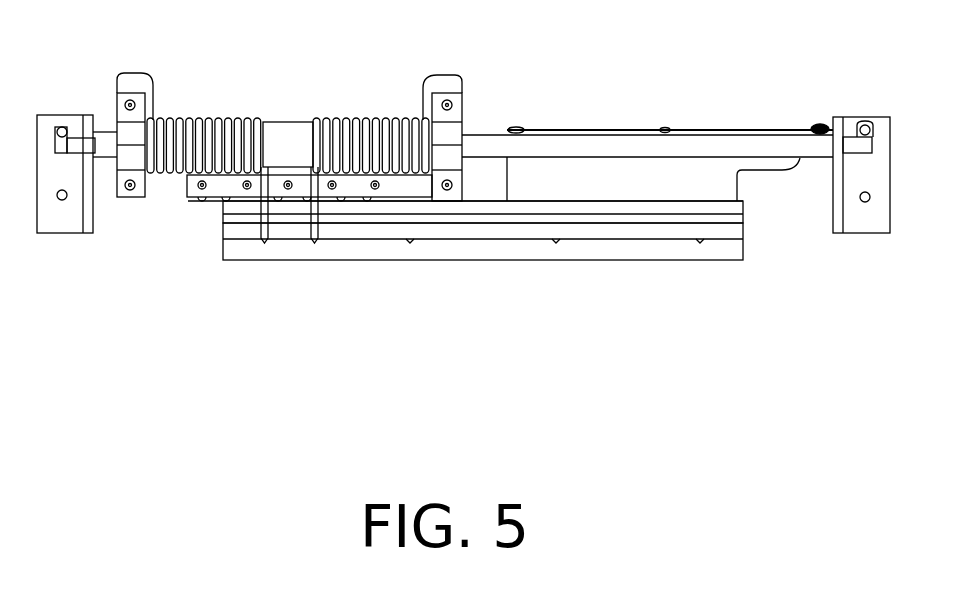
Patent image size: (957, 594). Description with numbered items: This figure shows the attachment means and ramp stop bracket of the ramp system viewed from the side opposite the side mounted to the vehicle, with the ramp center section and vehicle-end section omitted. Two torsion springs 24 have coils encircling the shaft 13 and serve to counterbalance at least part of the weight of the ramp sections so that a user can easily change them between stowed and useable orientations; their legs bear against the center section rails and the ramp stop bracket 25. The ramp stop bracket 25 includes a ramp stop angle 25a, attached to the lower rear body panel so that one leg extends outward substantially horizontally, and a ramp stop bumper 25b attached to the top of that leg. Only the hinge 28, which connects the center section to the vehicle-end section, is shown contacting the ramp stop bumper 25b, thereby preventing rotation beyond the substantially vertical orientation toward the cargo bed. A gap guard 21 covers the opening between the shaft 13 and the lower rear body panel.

The shaft 13 is at (493, 145).
The gap guard 21 is at (592, 190).
The torsion springs 24 is at (196, 98).
The ramp stop bracket 25 is at (509, 289).
The ramp stop angle 25a is at (457, 250).
The ramp stop bumper 25b is at (737, 210).
The hinge 28 is at (220, 201).